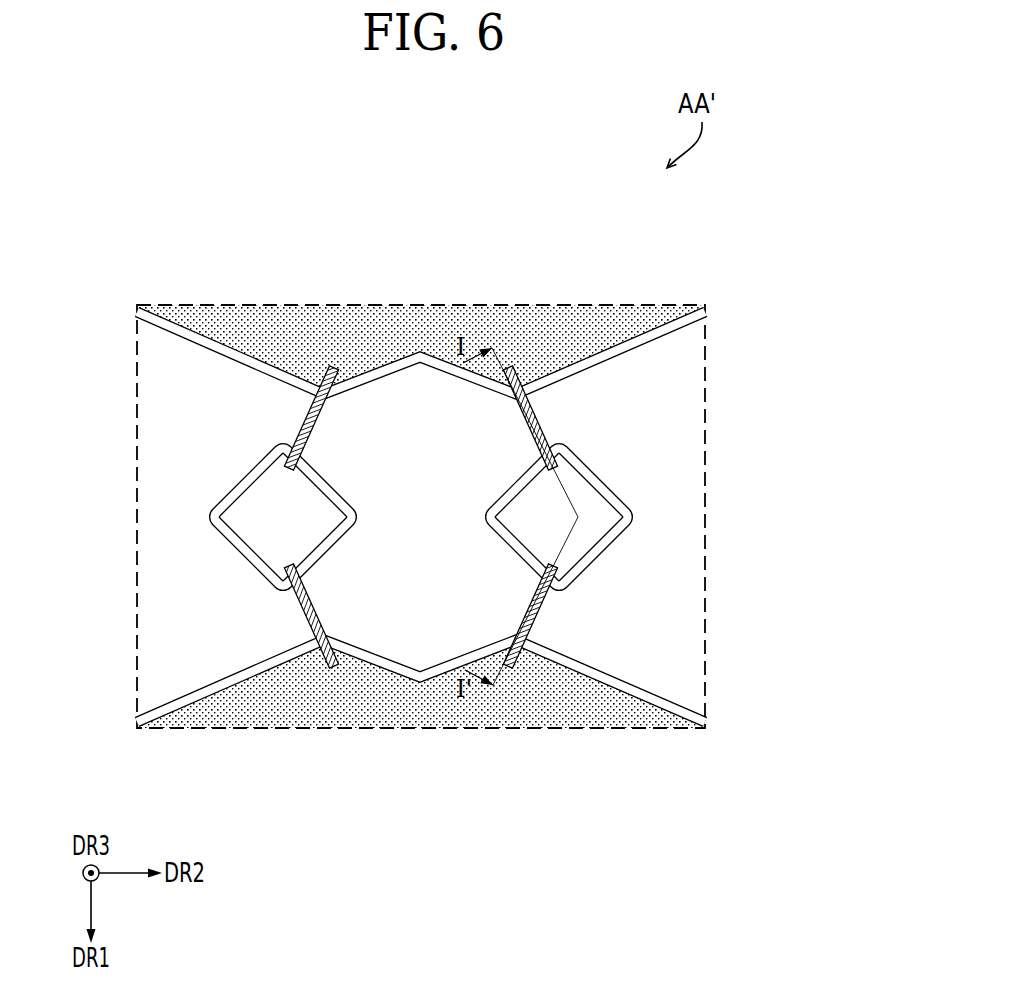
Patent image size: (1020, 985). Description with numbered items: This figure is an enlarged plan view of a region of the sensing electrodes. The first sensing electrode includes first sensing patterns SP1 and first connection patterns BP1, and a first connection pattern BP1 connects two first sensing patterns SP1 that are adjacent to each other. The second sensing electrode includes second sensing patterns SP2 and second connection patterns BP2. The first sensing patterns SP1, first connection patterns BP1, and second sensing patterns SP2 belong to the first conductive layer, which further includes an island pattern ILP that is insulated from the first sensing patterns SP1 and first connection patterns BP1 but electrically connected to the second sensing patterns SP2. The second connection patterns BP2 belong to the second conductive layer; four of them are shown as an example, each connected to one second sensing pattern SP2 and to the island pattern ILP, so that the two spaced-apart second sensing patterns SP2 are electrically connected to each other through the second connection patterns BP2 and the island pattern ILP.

The first sensing pattern SP1 is at (213, 373).
The second sensing pattern SP2 is at (547, 318).
The first connection pattern BP1 is at (413, 388).
The second connection pattern BP2 is at (545, 607).
The island pattern ILP is at (605, 516).